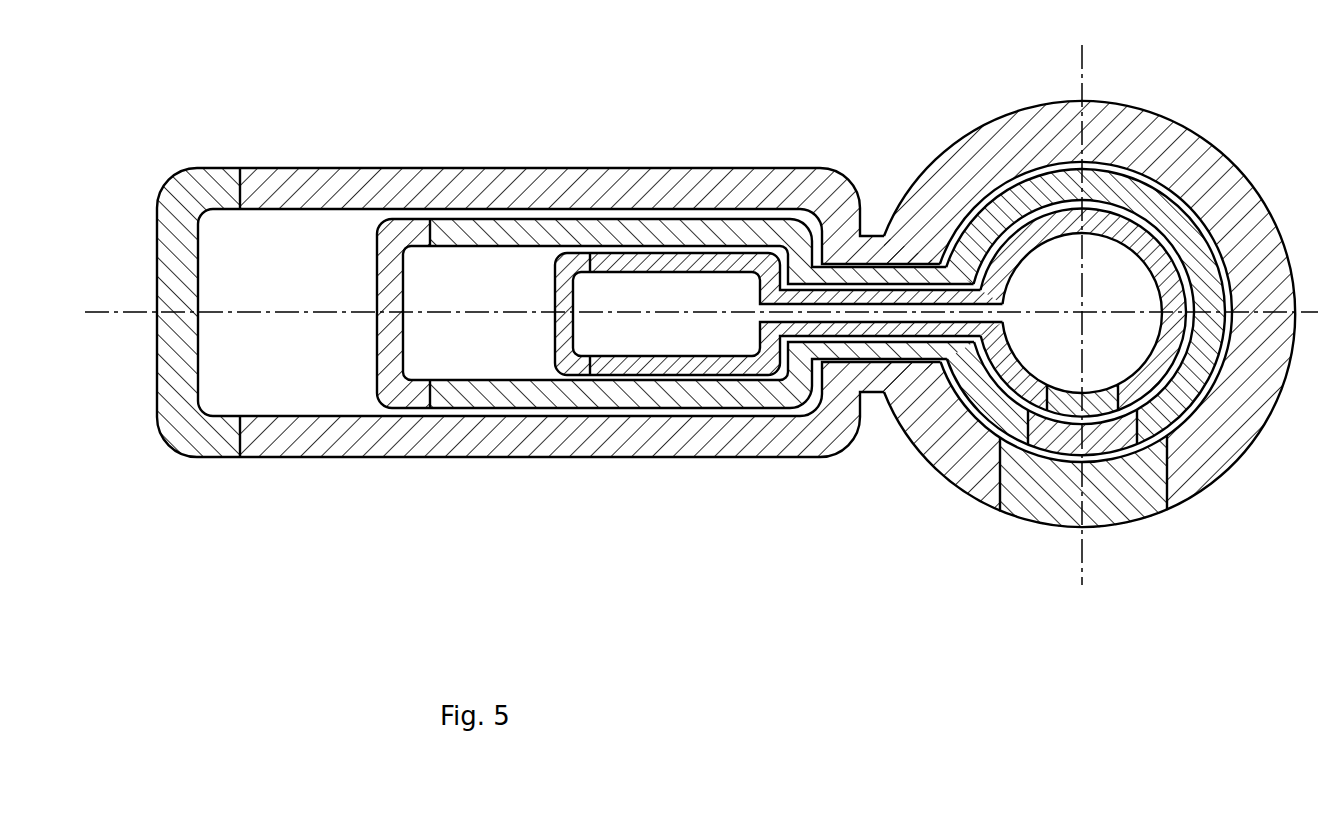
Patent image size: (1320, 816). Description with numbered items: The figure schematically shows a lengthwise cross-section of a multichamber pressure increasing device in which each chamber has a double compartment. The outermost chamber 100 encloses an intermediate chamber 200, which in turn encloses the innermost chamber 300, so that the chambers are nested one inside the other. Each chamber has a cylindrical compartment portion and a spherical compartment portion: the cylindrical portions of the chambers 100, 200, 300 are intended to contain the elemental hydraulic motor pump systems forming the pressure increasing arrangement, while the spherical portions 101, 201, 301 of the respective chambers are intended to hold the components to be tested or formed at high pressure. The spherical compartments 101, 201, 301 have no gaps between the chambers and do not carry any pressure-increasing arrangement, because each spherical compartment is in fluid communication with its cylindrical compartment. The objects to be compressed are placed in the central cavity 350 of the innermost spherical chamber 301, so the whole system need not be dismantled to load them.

The outer tube body 100 is at (320, 190).
The outer ring of outer tube 101 is at (1065, 508).
The intermediate tube 200 is at (495, 237).
The ring of intermediate tube 201 is at (1120, 450).
The inner pin 300 is at (703, 260).
The ring of inner pin 301 is at (1068, 395).
The bore 350 is at (1052, 283).